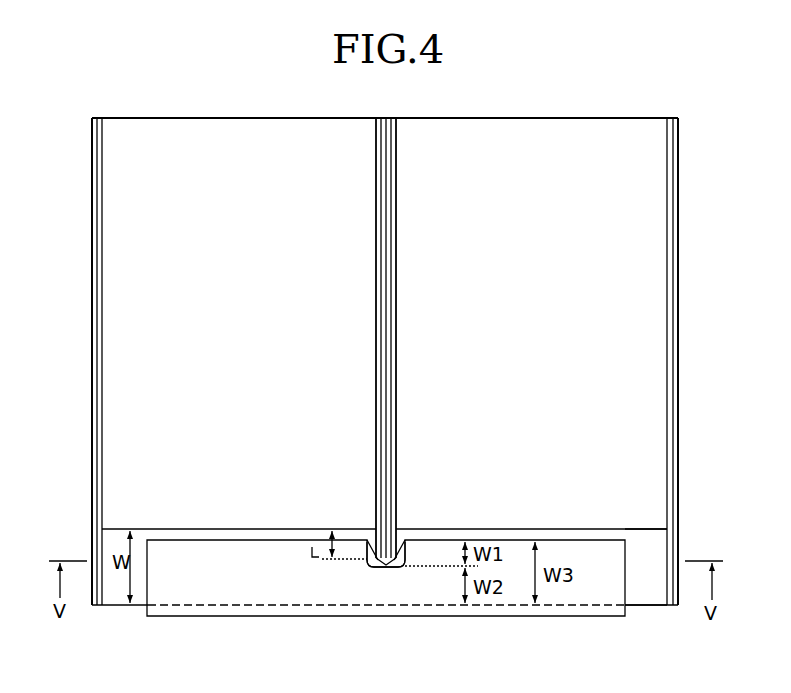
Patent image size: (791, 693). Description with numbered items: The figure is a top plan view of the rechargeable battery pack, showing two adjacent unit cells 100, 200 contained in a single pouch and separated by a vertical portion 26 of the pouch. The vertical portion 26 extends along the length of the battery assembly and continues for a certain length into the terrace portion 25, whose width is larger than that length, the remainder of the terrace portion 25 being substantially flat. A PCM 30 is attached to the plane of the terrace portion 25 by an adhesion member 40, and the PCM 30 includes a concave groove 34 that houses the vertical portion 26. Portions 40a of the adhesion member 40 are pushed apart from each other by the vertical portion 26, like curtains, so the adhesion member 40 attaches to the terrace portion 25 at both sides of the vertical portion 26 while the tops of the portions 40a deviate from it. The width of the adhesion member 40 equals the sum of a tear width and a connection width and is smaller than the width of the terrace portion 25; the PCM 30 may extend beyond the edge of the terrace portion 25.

The unit cell 100 is at (89, 316).
The unit cell 200 is at (681, 316).
The vertical portion 26 is at (383, 486).
The PCM 30 is at (260, 588).
The adhesion member 40 is at (192, 606).
The portions of the adhesion member 40a is at (377, 534).
The concave groove 34 is at (405, 558).
The terrace portion 25 is at (647, 588).